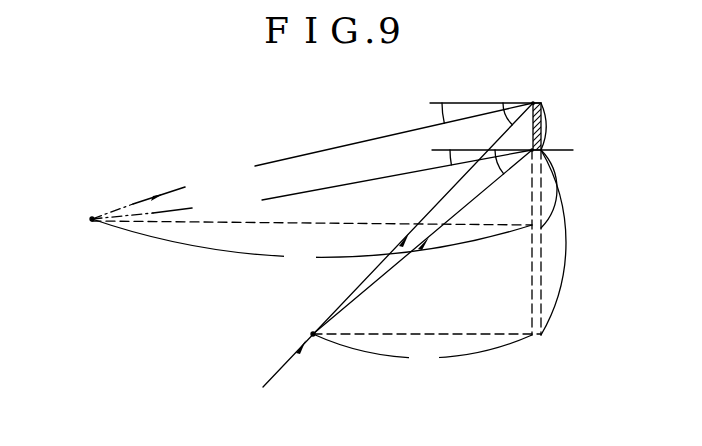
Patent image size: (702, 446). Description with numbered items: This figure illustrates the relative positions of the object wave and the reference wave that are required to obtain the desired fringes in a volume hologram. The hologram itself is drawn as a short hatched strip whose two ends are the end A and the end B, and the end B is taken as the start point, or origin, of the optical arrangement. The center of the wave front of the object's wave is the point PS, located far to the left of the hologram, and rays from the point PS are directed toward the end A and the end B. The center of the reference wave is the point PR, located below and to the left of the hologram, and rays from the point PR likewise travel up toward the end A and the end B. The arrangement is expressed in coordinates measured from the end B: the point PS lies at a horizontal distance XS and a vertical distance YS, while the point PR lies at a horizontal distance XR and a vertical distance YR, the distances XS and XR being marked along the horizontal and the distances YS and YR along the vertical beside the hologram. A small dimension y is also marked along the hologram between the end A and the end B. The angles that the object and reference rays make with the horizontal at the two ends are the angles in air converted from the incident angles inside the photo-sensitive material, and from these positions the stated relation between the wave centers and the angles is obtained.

The center of the wave front of the object's wave PS is at (92, 233).
The center of the reference wave PR is at (305, 323).
The end of the hologram A is at (526, 93).
The end of the hologram B is at (524, 170).
The X coordinate of the object wave center XS is at (312, 245).
The X coordinate of the reference wave center XR is at (422, 351).
The Y coordinate of the object wave center YS is at (552, 189).
The Y coordinate of the reference wave center YR is at (559, 242).
The target segment height y is at (549, 126).